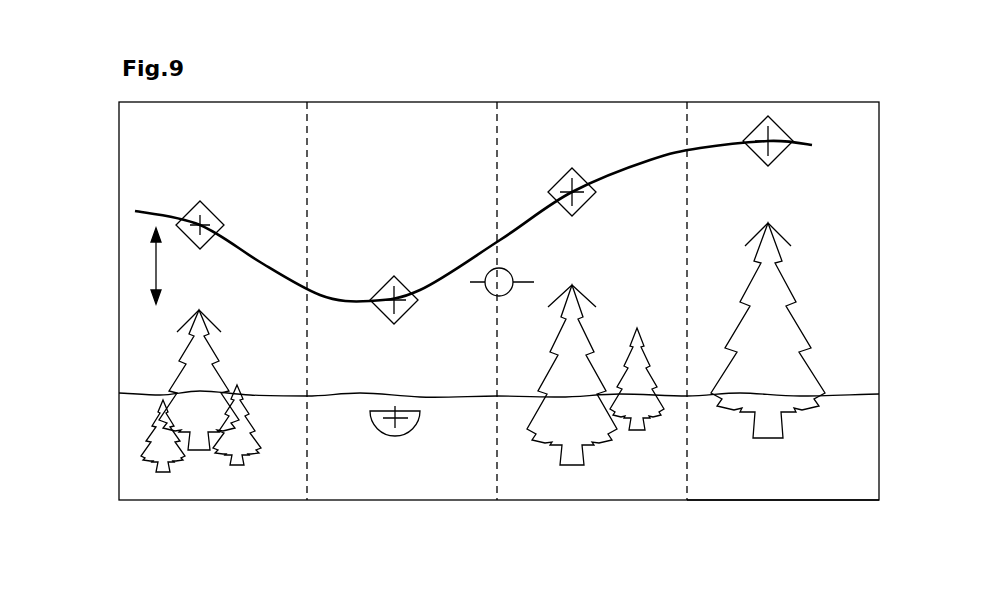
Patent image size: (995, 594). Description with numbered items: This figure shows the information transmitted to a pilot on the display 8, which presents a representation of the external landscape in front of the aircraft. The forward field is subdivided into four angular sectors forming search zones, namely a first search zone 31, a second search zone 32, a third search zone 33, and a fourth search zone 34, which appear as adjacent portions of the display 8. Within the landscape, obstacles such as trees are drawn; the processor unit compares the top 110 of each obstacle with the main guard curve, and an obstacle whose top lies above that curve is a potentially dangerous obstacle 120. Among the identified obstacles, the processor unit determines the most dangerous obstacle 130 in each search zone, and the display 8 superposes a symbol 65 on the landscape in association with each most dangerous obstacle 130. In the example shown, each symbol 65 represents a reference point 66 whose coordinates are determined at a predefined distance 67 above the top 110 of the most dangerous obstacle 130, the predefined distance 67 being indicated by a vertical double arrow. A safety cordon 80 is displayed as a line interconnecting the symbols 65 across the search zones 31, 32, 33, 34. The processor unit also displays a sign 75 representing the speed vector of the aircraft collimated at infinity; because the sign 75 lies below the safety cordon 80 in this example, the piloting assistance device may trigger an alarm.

The display 8 is at (618, 500).
The first search zone 31 is at (236, 490).
The second search zone 32 is at (390, 485).
The third search zone 33 is at (547, 487).
The fourth search zone 34 is at (745, 485).
The symbol 65 is at (220, 215).
The reference point 66 is at (205, 210).
The predefined distance 67 is at (156, 268).
The sign 75 is at (500, 268).
The safety cordon 80 is at (707, 145).
The top 110 is at (199, 304).
The potentially dangerous obstacle 120 is at (572, 280).
The most dangerous obstacle 130 is at (190, 372).